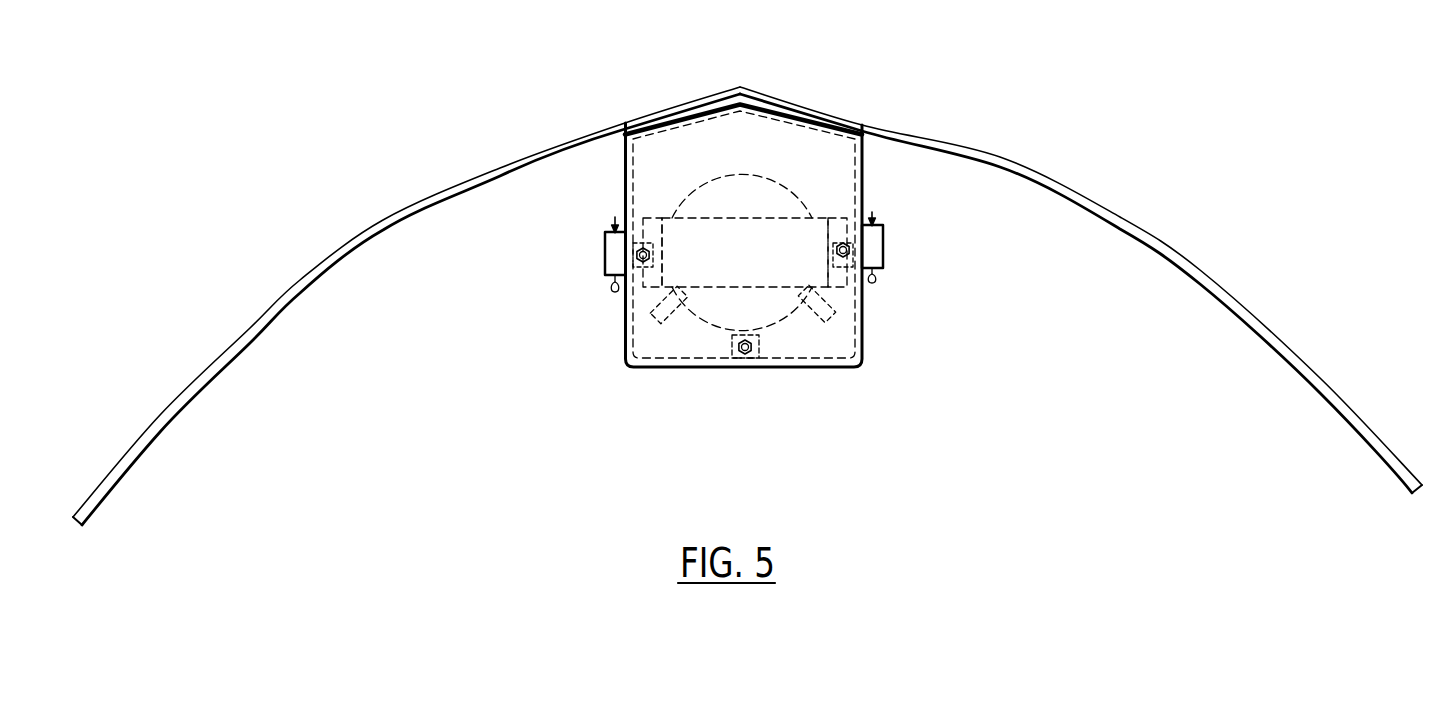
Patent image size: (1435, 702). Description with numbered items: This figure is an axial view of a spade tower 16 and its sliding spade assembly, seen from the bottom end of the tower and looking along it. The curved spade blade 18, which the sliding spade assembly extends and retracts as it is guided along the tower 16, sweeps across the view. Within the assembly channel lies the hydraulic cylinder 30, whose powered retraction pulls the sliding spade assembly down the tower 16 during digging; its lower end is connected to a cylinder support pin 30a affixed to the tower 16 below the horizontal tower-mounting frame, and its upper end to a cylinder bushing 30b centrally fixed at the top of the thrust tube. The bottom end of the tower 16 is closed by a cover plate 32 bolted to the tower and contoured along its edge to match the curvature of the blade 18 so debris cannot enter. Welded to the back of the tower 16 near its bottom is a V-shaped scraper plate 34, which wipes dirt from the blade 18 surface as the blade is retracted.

The spade tower 16 is at (836, 368).
The spade blade 18 is at (478, 178).
The hydraulic cylinder 30 is at (800, 193).
The cylinder support pin 30a is at (688, 195).
The cylinder bushing 30b is at (864, 177).
The cover plate 32 is at (660, 343).
The V-shaped scraper plate 34 is at (680, 122).